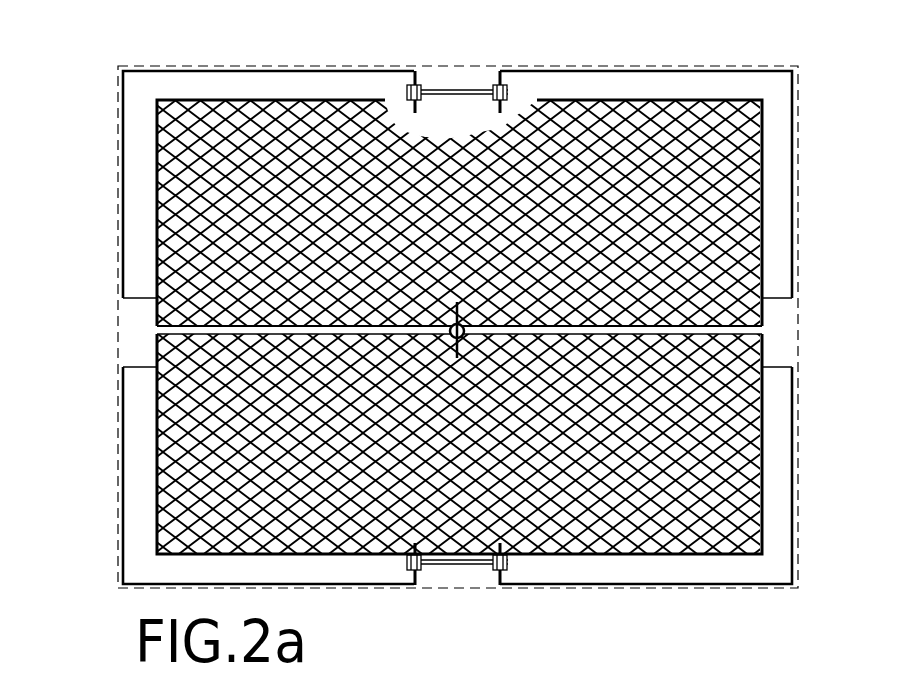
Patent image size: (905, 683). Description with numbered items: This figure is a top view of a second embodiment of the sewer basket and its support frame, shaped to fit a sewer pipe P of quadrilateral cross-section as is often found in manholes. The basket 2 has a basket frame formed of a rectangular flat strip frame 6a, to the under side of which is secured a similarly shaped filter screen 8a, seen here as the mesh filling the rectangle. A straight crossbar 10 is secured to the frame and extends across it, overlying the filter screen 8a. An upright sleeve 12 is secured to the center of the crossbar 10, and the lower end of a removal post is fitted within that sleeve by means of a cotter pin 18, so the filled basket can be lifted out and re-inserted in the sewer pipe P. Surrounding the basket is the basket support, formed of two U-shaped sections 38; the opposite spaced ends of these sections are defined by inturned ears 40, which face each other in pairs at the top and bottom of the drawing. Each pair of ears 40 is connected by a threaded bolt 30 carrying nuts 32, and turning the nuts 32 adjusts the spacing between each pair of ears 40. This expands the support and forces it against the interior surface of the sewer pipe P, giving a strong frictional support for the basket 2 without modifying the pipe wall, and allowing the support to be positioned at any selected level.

The basket 2 is at (98, 269).
The rectangular flat strip frame 6a is at (763, 197).
The filter screen 8a is at (740, 411).
The crossbar 10 is at (203, 340).
The upright sleeve 12 is at (452, 338).
The cotter pin 18 is at (453, 340).
The threaded bolt 30 is at (460, 92).
The nuts 32 is at (505, 80).
The U-shaped sections 38 is at (123, 183).
The inturned ears 40 is at (417, 76).
The sewer pipe P is at (797, 273).